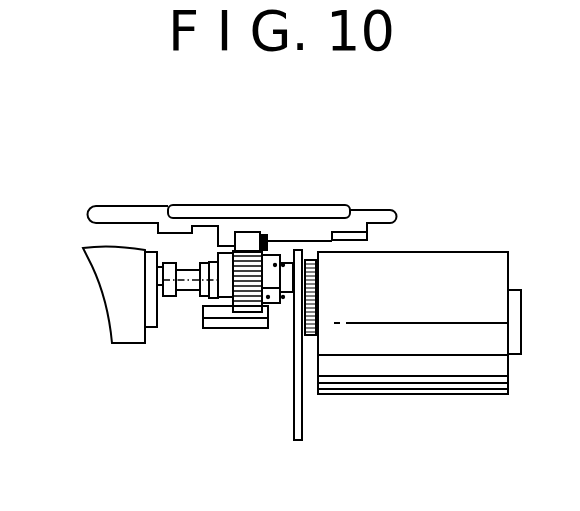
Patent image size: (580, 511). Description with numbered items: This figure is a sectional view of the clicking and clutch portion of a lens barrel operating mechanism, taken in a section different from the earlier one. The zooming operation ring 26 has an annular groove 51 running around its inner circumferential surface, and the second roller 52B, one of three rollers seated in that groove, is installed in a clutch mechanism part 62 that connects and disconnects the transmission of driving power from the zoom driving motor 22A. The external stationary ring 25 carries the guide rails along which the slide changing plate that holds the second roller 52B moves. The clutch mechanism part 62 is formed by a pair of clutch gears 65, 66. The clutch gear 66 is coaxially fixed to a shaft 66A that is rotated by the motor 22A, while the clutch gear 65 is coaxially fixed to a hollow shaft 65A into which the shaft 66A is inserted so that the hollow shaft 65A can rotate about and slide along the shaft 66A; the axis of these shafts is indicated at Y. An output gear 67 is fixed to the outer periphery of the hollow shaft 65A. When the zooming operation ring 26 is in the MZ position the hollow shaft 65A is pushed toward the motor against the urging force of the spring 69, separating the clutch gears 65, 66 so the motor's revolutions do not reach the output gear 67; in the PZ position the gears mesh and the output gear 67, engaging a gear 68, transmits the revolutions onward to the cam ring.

The zoom driving motor 22A is at (444, 273).
The external stationary ring 25 is at (118, 296).
The zooming operation ring 26 is at (130, 207).
The annular groove 51 is at (263, 241).
The second roller 52B is at (260, 232).
The clutch mechanism part 62 is at (125, 356).
The clutch gear 65 is at (200, 298).
The hollow shaft 65A is at (218, 277).
The clutch gear 66 is at (167, 297).
The shaft 66A is at (187, 263).
The output gear 67 is at (265, 305).
The gear 68 is at (217, 320).
The spring 69 is at (280, 302).
The axis Y is at (252, 244).